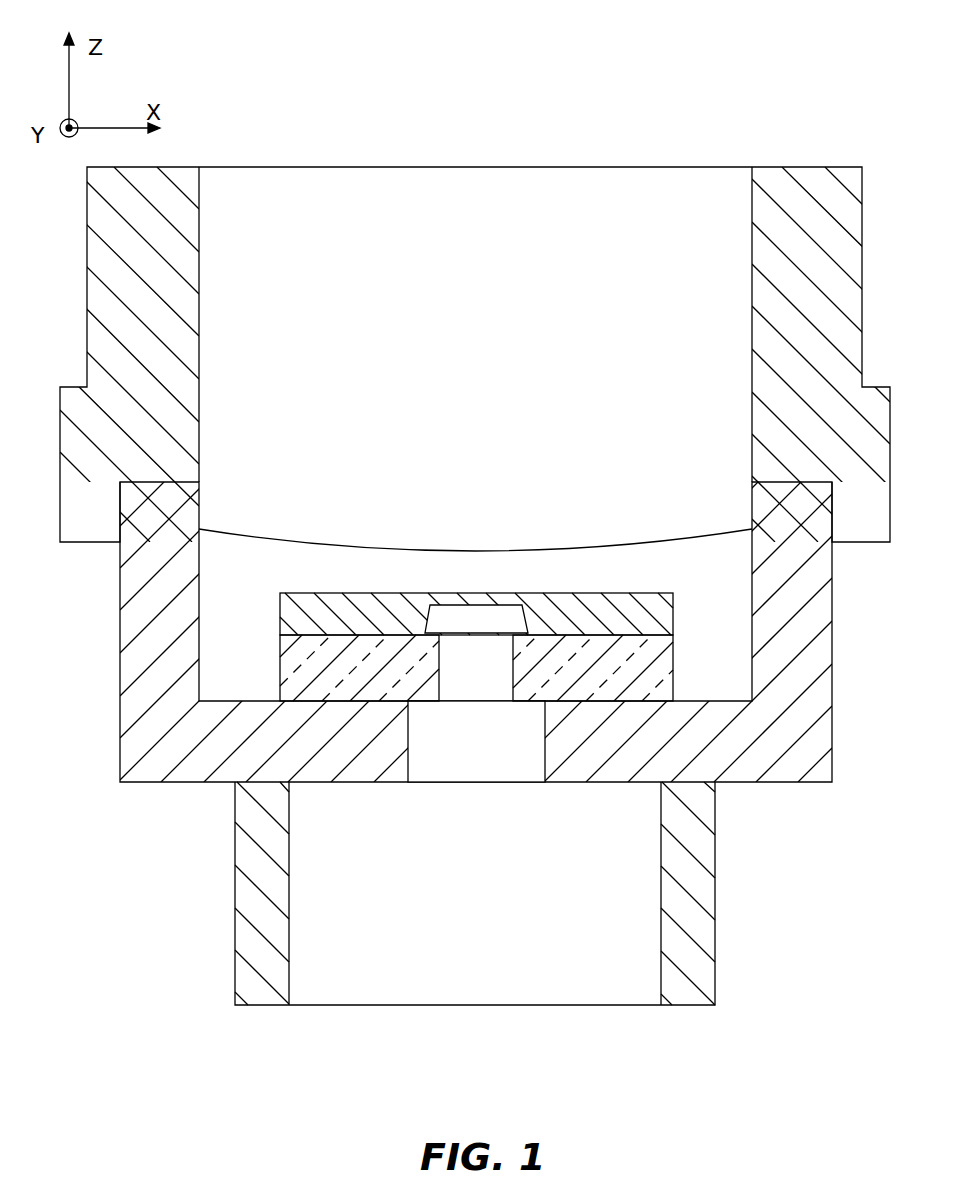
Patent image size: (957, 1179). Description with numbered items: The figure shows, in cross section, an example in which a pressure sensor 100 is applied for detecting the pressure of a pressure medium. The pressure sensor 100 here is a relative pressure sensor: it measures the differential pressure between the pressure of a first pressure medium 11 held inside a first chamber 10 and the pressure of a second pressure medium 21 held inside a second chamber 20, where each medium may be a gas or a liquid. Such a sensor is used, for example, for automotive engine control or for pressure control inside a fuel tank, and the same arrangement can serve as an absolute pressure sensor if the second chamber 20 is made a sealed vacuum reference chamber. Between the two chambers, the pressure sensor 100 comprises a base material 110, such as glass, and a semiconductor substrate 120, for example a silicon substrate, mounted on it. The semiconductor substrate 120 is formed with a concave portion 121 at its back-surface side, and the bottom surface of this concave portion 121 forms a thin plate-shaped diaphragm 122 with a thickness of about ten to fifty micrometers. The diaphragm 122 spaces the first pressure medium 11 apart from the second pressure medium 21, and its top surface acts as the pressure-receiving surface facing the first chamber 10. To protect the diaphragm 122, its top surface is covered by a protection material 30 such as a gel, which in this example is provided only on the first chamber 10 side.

The first chamber 10 is at (678, 167).
The first pressure medium 11 is at (458, 180).
The second chamber 20 is at (588, 1005).
The second pressure medium 21 is at (473, 967).
The protection material 30 is at (322, 545).
The pressure sensor 100 is at (506, 591).
The base material 110 is at (673, 678).
The semiconductor substrate 120 is at (506, 628).
The concave portion 121 is at (480, 620).
The diaphragm 122 is at (470, 595).